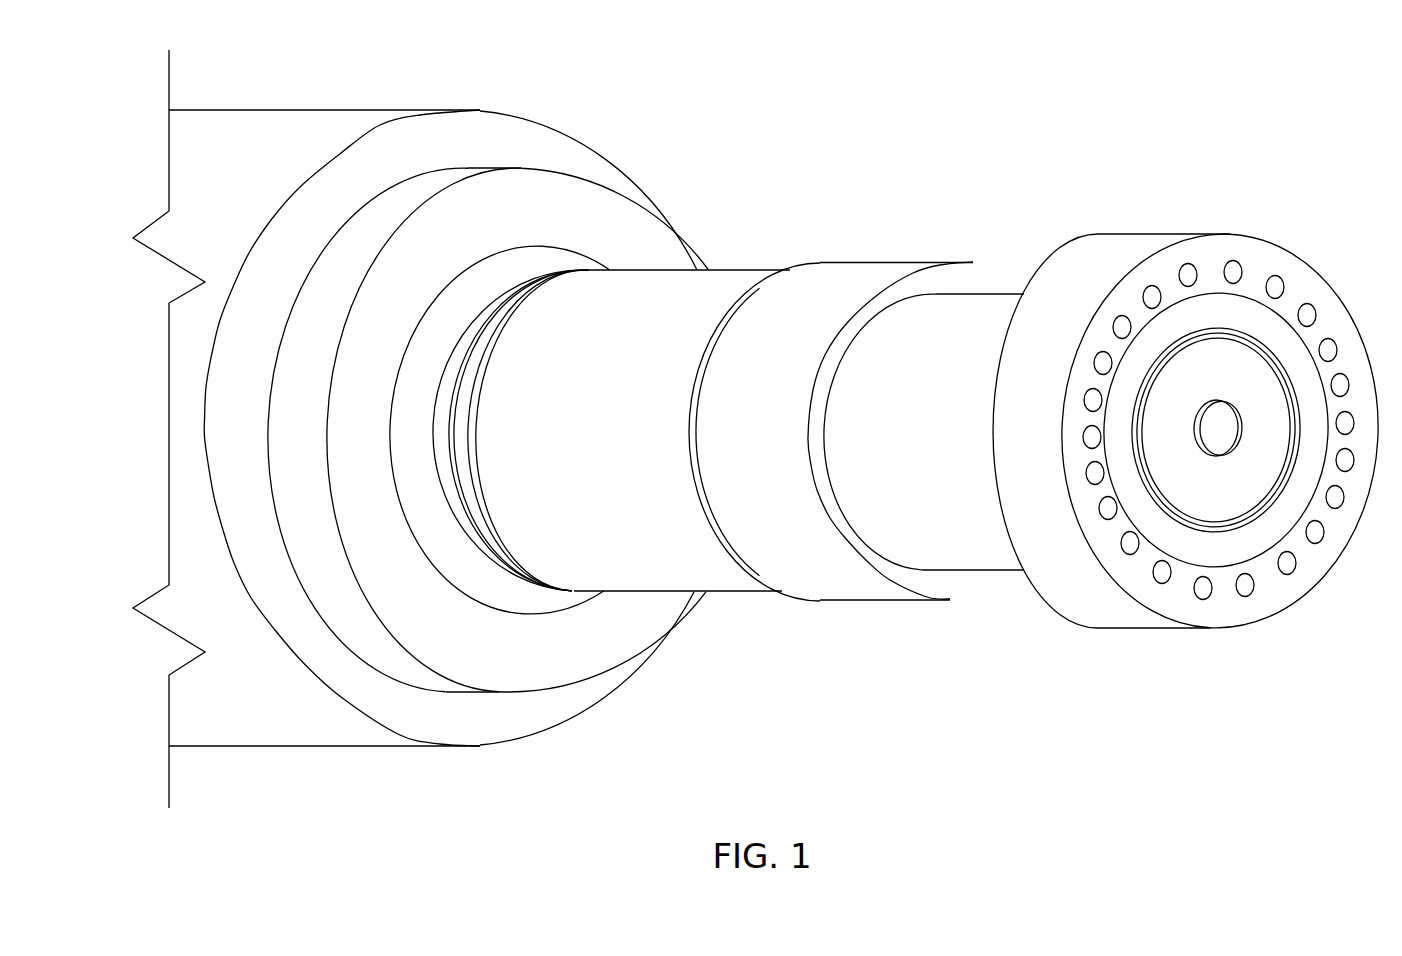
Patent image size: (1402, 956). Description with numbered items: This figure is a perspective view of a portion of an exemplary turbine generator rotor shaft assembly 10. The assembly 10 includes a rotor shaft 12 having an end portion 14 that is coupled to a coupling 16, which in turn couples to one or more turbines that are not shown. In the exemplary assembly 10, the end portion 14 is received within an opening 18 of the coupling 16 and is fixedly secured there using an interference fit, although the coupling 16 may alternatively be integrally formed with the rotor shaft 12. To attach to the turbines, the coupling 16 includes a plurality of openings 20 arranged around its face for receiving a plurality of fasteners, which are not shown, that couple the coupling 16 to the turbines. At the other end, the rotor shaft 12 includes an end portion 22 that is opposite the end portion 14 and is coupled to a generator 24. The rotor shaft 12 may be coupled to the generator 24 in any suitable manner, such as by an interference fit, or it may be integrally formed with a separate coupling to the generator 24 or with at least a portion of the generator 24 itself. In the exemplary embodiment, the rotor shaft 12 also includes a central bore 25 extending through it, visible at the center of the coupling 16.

The turbine generator rotor shaft assembly 10 is at (948, 135).
The rotor shaft 12 is at (731, 270).
The end portion 14 is at (1268, 394).
The coupling 16 is at (1121, 607).
The opening 18 is at (1220, 520).
The openings 20 is at (1110, 510).
The end portion 22 is at (580, 530).
The generator 24 is at (249, 137).
The central bore 25 is at (1197, 432).